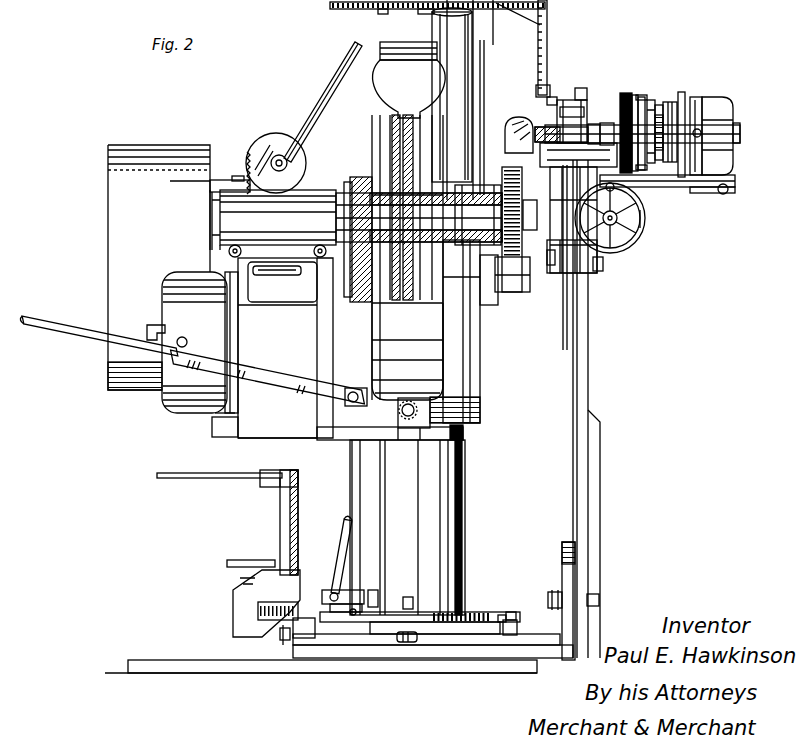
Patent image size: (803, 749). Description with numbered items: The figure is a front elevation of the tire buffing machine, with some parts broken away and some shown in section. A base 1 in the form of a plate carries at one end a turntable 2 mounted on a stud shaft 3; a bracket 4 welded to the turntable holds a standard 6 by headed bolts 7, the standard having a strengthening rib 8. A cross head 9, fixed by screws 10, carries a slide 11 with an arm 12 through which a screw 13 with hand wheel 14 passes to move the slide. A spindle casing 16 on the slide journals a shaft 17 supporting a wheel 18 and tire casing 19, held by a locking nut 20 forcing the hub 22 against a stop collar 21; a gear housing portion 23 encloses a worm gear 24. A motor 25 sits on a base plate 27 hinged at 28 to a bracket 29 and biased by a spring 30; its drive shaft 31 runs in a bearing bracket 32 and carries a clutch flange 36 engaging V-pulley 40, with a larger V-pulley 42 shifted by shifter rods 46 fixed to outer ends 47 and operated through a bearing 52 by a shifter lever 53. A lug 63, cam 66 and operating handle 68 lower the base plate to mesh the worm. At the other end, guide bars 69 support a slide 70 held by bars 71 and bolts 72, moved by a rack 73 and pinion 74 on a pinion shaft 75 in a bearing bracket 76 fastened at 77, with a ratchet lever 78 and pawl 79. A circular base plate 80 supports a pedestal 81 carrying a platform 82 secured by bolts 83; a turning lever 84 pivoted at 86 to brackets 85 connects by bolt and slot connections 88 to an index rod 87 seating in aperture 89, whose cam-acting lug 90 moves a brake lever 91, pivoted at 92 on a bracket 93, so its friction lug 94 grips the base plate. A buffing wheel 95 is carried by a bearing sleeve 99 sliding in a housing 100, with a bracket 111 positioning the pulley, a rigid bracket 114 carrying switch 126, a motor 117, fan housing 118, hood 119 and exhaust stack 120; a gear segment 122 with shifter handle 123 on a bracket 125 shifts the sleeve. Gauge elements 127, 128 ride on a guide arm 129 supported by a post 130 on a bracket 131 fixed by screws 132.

The base 1 is at (153, 625).
The turntable 2 is at (445, 652).
The stud shaft 3 is at (402, 645).
The bracket 4 is at (562, 575).
The standard 6 is at (586, 373).
The headed bolts 7 is at (600, 600).
The strengthening rib 8 is at (600, 510).
The cross head 9 is at (568, 270).
The screws 10 is at (602, 265).
The slide 11 is at (562, 265).
The arm 12 is at (573, 220).
The screw 13 is at (622, 222).
The hand wheel 14 is at (638, 246).
The spindle casing 16 is at (484, 183).
The shaft 17 is at (477, 257).
The wheel 18 is at (378, 124).
The tire casing 19 is at (407, 297).
The locking nut 20 is at (388, 150).
The stop collar 21 is at (432, 270).
The hub 22 is at (412, 197).
The gear housing portion 23 is at (527, 283).
The worm gear 24 is at (510, 300).
The motor 25 is at (725, 97).
The base plate 27 is at (648, 185).
The hinge 28 is at (730, 189).
The bracket 29 is at (695, 193).
The coil compression spring 30 is at (543, 150).
The drive shaft 31 is at (612, 123).
The bearing bracket 32 is at (685, 92).
The clutch flange 36 is at (668, 100).
The V-pulley 40 is at (660, 100).
The V-pulley 42 is at (625, 93).
The shifter rods 46 is at (654, 100).
The radially-projecting outer ends 47 is at (641, 97).
The bearing 52 is at (705, 133).
The shifter lever 53 is at (705, 97).
The lug 63 is at (590, 115).
The cam 66 is at (585, 100).
The operating handle 68 is at (590, 85).
The guide bars 69 is at (300, 635).
The slide 70 is at (470, 645).
The bars 71 is at (295, 640).
The bolts 72 is at (510, 612).
The rack 73 is at (318, 622).
The pinion 74 is at (272, 615).
The pinion shaft 75 is at (278, 535).
The bearing bracket 76 is at (240, 602).
The bolt 77 is at (280, 638).
The ratchet lever 78 is at (232, 478).
The pawl 79 is at (272, 470).
The circular base plate 80 is at (450, 612).
The pedestal 81 is at (463, 486).
The platform 82 is at (226, 428).
The headed bolts 83 is at (455, 412).
The turning lever 84 is at (92, 345).
The brackets 85 is at (440, 400).
The pivot 86 is at (405, 420).
The index rod 87 is at (352, 472).
The bolt and slot connections 88 is at (352, 390).
The indexing aperture 89 is at (353, 613).
The cam-acting lug 90 is at (372, 545).
The brake lever 91 is at (342, 545).
The pivot 92 is at (333, 590).
The bracket 93 is at (405, 597).
The friction lug 94 is at (335, 612).
The buffing wheel 95 is at (362, 166).
The bearing sleeve 99 is at (212, 220).
The housing 100 is at (274, 223).
The bracket 111 is at (216, 180).
The rigid bracket 114 is at (285, 348).
The motor 117 is at (200, 342).
The fan housing 118 is at (467, 340).
The hood 119 is at (354, 186).
The exhaust stack 120 is at (456, 33).
The gear segment 122 is at (283, 135).
The shifter handle 123 is at (333, 62).
The bracket 125 is at (265, 152).
The switch 126 is at (282, 282).
The gauge element 127 is at (383, 9).
The gauge element 128 is at (428, 9).
The guide arm 129 is at (333, 4).
The post 130 is at (547, 36).
The bracket 131 is at (553, 85).
The screws 132 is at (555, 100).